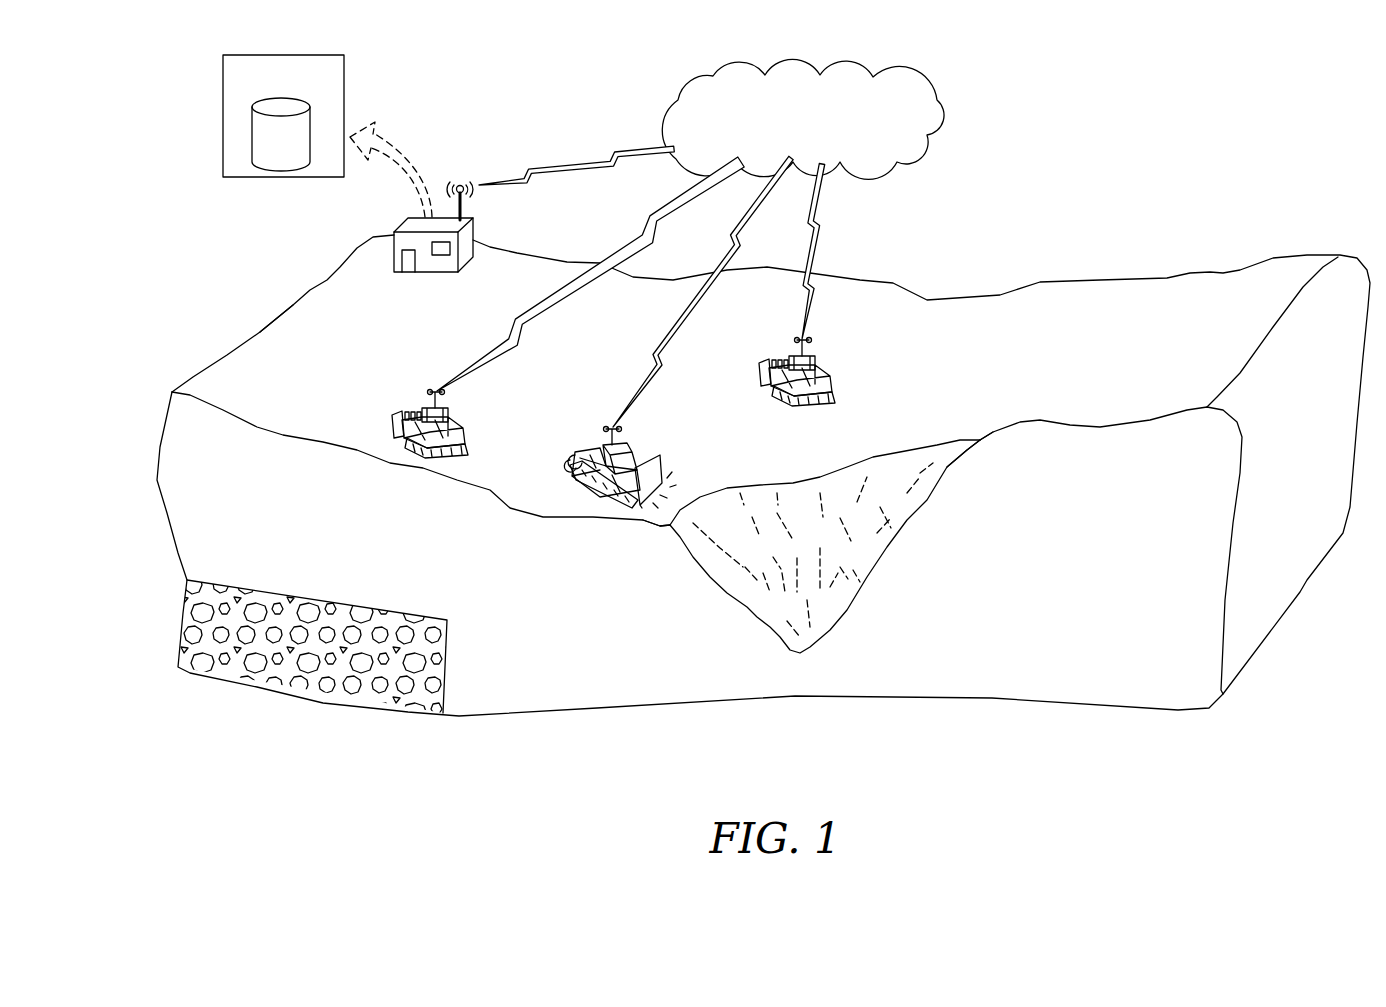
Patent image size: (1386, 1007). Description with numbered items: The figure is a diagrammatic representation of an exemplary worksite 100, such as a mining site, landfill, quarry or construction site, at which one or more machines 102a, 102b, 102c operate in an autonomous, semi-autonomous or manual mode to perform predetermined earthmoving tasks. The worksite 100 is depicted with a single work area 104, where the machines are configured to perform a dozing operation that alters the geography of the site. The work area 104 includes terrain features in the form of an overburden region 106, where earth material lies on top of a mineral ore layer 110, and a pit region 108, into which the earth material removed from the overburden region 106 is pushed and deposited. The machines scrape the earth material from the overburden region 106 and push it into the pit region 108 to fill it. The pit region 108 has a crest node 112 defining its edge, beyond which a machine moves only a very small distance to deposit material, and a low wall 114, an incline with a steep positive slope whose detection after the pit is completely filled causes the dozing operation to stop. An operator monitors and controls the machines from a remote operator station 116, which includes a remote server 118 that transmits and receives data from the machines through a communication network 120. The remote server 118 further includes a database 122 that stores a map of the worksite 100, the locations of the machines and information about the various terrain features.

The worksite 100 is at (1223, 110).
The machine 102a is at (820, 370).
The machine 102b is at (675, 468).
The machine 102c is at (452, 421).
The work area 104 is at (1268, 257).
The overburden region 106 is at (193, 433).
The pit region 108 is at (817, 587).
The mineral ore layer 110 is at (190, 637).
The crest node 112 is at (669, 525).
The low wall 114 is at (967, 458).
The remote operator station 116 is at (413, 226).
The remote server 118 is at (296, 86).
The communication network 120 is at (821, 127).
The database 122 is at (297, 152).